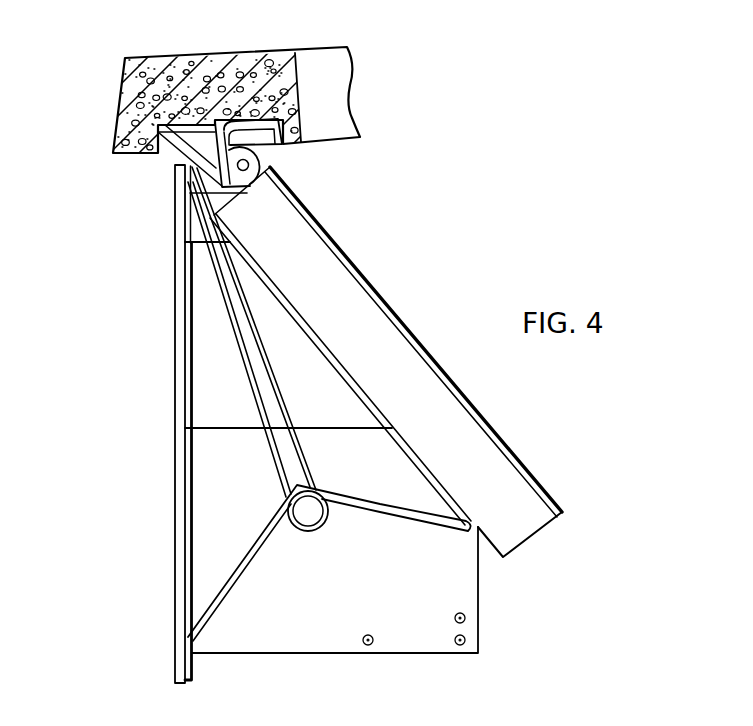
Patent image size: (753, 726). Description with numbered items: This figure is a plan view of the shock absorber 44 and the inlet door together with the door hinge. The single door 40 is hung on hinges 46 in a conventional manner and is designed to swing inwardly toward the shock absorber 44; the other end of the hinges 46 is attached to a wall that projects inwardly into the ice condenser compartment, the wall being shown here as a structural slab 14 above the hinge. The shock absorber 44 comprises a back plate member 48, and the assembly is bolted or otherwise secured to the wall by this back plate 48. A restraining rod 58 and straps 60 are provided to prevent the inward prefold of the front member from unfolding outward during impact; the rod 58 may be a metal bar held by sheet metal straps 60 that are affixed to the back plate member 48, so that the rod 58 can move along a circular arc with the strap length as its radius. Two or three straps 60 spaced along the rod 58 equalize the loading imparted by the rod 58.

The concrete slab / deck 14 is at (237, 63).
The single door 40 is at (378, 336).
The shock absorber 44 is at (373, 475).
The hinges 46 is at (252, 160).
The back plate member 48 is at (177, 328).
The restraining rod 58 is at (309, 518).
The strap 60 is at (267, 453).